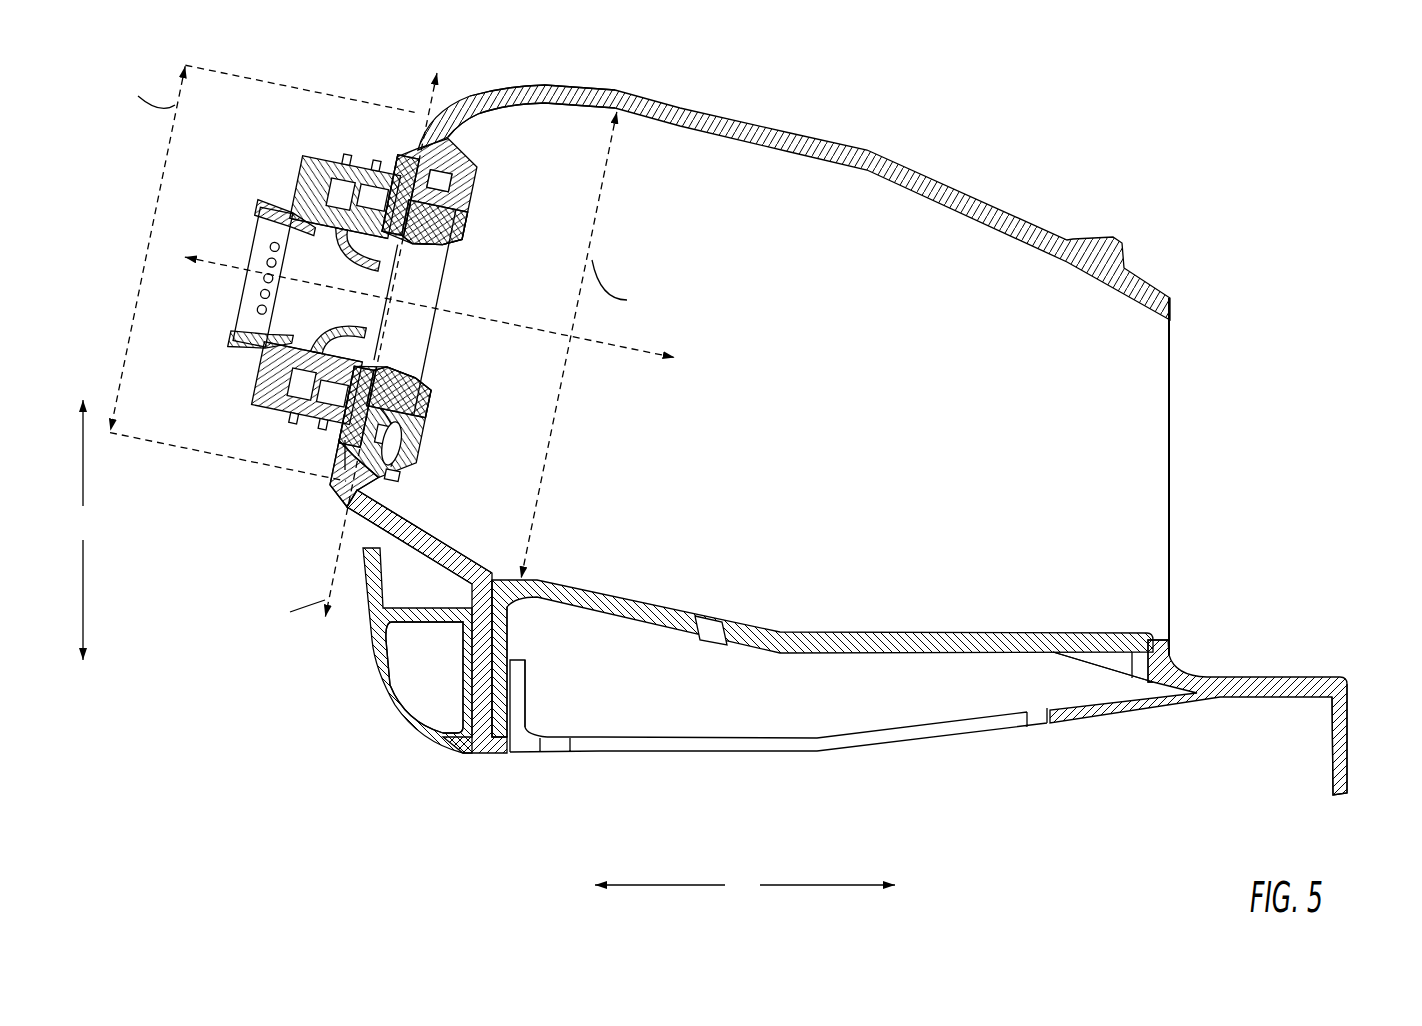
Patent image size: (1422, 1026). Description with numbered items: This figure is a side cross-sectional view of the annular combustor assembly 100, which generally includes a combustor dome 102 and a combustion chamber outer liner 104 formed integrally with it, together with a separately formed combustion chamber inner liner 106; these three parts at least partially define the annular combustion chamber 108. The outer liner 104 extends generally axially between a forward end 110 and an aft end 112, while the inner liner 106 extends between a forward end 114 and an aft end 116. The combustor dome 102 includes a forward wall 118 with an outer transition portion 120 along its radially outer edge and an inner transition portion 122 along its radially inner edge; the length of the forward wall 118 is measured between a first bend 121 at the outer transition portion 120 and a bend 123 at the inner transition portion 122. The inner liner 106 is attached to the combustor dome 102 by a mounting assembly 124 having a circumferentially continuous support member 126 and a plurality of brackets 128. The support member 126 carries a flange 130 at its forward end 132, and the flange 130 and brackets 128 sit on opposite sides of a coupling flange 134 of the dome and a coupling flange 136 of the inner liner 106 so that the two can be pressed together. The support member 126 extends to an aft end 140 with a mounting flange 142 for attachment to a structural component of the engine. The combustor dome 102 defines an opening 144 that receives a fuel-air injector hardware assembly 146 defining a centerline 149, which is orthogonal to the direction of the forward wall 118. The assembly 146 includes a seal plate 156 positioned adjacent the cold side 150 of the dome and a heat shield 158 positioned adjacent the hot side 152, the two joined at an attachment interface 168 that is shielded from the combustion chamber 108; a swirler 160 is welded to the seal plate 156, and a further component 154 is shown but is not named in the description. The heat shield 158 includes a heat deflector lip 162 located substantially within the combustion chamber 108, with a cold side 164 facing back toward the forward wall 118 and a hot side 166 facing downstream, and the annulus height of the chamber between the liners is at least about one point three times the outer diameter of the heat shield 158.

The combustor assembly 100 is at (906, 128).
The combustor dome 102 is at (411, 140).
The combustion chamber outer liner 104 is at (800, 136).
The combustion chamber inner liner 106 is at (834, 632).
The combustion chamber 108 is at (783, 380).
The forward end 110 is at (612, 86).
The aft end 112 is at (1172, 273).
The forward end 114 is at (530, 565).
The aft end 116 is at (1153, 622).
The forward wall 118 is at (460, 165).
The outer transition portion 120 is at (583, 124).
The first bend 121 is at (475, 128).
The inner transition portion 122 is at (456, 540).
The first bend 123 is at (400, 497).
The mounting assembly 124 is at (570, 822).
The support member 126 is at (812, 745).
The brackets 128 is at (376, 668).
The flange 130 is at (523, 728).
The forward end 132 is at (550, 716).
The coupling flange 134 is at (462, 688).
The coupling flange 136 is at (500, 652).
The aft end 140 is at (1252, 757).
The mounting flange 142 is at (1340, 773).
The opening 144 is at (420, 282).
The fuel-air injector hardware assembly 146 is at (318, 148).
The centerline 149 is at (633, 358).
The cold side 150 is at (340, 466).
The hot side 152 is at (398, 478).
The outer boss wall 154 is at (430, 137).
The seal plate 156 is at (392, 175).
The heat shield 158 is at (470, 190).
The swirler 160 is at (300, 222).
The heat deflector lip 162 is at (585, 185).
The cold side 164 is at (393, 480).
The hot side 166 is at (417, 447).
The attachment interface 168 is at (412, 383).